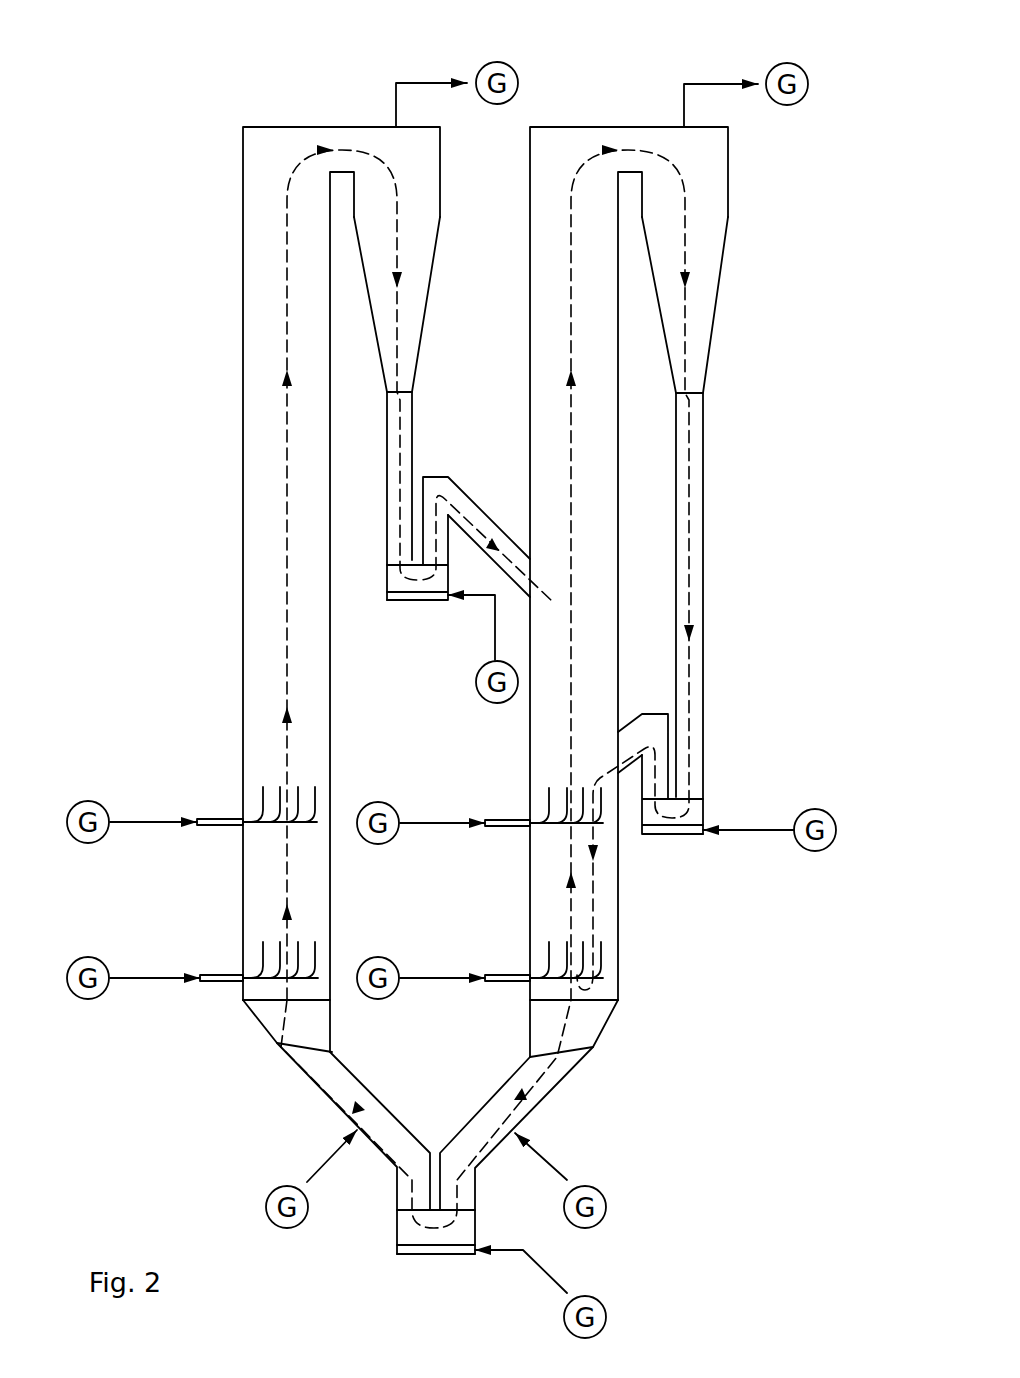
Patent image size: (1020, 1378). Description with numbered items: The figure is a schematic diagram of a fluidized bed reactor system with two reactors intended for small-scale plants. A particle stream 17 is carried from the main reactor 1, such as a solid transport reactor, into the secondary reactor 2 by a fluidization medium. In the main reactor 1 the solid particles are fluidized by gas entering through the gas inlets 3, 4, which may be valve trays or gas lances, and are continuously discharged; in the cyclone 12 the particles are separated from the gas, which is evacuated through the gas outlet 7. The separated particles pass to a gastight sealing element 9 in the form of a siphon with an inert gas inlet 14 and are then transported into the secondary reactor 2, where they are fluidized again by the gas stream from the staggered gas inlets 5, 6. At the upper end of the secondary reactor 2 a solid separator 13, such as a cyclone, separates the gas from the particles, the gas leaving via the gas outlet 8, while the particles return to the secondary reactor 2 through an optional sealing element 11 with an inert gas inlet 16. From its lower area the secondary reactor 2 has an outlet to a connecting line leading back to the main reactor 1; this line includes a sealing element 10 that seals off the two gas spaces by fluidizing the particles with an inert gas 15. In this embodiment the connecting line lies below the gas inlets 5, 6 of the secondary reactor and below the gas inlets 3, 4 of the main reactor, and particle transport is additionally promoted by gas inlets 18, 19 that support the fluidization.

The main reactor 1 is at (241, 630).
The secondary reactor 2 is at (525, 433).
The gas inlet 3 is at (225, 975).
The gas inlet 4 is at (223, 818).
The staggered gas inlet 5 is at (512, 975).
The staggered gas inlet 6 is at (510, 818).
The gas outlet 7 is at (422, 82).
The gas outlet 8 is at (708, 82).
The gastight sealing element 9 is at (417, 602).
The sealing element 10 is at (435, 1257).
The sealing element 11 is at (673, 838).
The cyclone 12 is at (430, 305).
The solid separator 13 is at (718, 307).
The inert gas inlet 14 is at (490, 628).
The inert gas 15 is at (542, 1273).
The inert gas inlet 16 is at (762, 838).
The particle stream 17 is at (283, 193).
The gas inlet 18 is at (323, 1163).
The gas inlet 19 is at (553, 1165).